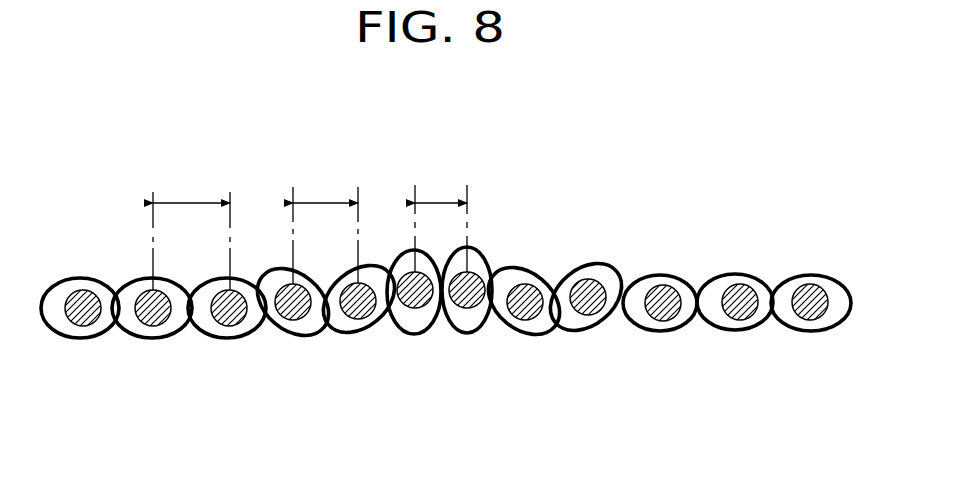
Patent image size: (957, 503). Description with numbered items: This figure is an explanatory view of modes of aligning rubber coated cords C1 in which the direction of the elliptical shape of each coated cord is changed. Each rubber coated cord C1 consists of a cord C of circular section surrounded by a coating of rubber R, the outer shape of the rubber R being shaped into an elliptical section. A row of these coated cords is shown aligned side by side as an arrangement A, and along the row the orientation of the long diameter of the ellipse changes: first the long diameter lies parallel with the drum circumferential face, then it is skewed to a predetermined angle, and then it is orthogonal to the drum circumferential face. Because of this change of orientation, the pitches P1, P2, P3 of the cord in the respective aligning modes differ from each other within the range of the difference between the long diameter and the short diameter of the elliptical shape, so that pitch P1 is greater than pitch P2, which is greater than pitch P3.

The optical fiber array A is at (793, 250).
The cord C is at (652, 320).
The rubber coated cord C1 is at (660, 268).
The rubber R is at (722, 327).
The pitch P1 is at (191, 225).
The pitch P2 is at (325, 222).
The pitch P3 is at (441, 213).